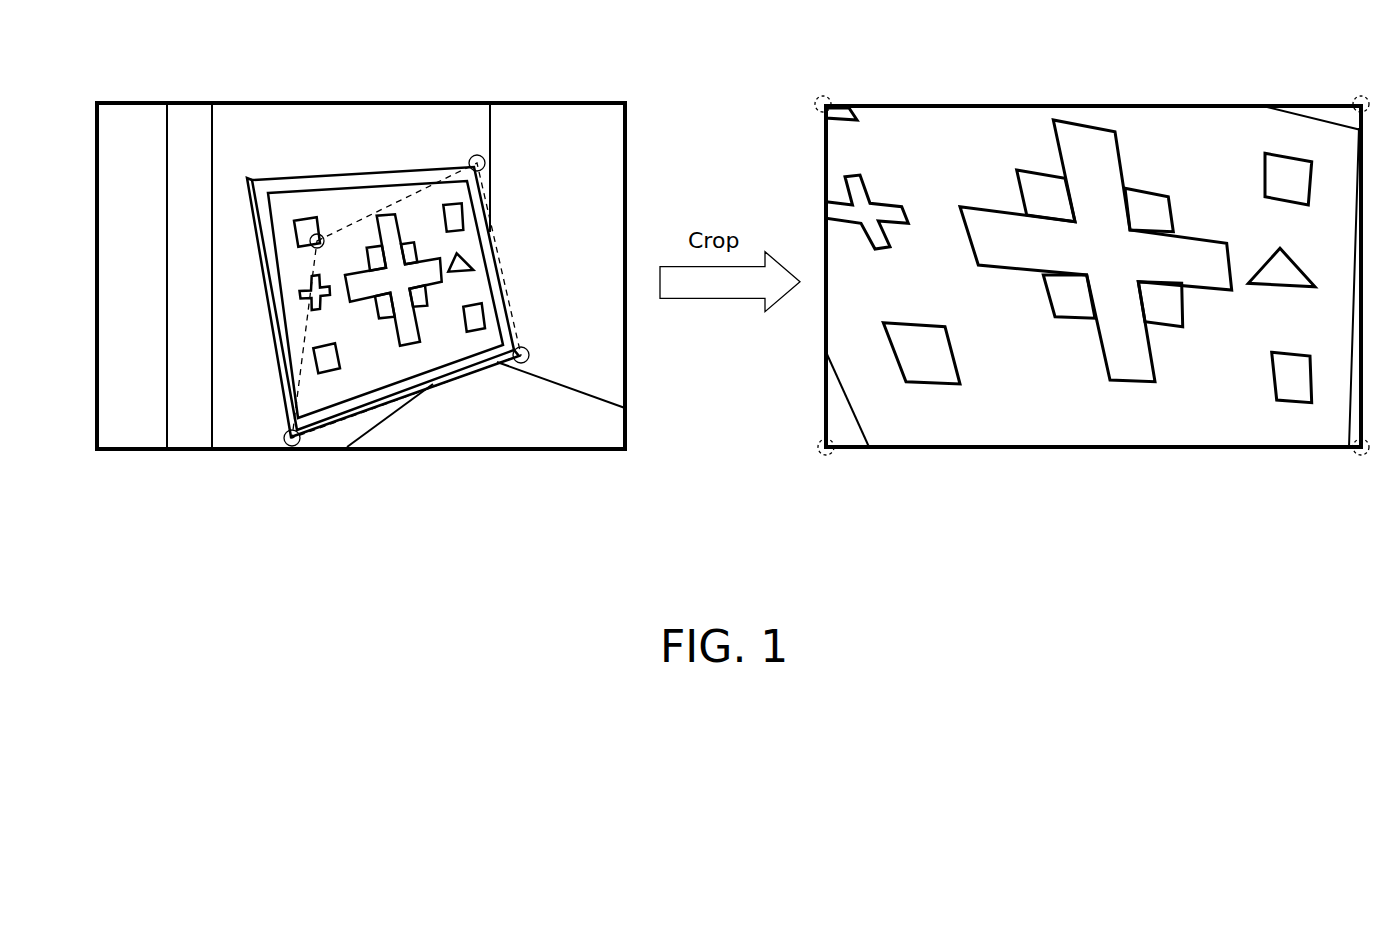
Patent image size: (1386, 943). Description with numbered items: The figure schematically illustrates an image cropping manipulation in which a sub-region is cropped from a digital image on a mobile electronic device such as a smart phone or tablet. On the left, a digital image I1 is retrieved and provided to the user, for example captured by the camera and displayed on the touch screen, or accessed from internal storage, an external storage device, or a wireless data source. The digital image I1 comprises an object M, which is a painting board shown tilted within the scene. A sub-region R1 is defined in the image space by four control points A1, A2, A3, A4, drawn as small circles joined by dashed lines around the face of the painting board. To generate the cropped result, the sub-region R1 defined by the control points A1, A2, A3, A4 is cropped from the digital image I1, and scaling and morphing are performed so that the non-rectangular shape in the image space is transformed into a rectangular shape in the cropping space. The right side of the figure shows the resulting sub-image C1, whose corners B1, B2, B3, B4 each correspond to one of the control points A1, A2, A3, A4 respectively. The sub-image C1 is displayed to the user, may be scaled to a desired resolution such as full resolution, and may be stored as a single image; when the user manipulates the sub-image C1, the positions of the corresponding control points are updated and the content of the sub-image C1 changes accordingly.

The digital image I1 is at (385, 102).
The object M is at (345, 178).
The sub-region R1 is at (500, 268).
The control point A1 is at (322, 235).
The control point A2 is at (284, 438).
The control point A3 is at (471, 157).
The control point A4 is at (528, 352).
The sub-image C1 is at (1093, 104).
The corner of the sub-image B1 is at (825, 95).
The corner of the sub-image B2 is at (822, 454).
The corner of the sub-image B3 is at (1360, 96).
The corner of the sub-image B4 is at (1362, 456).